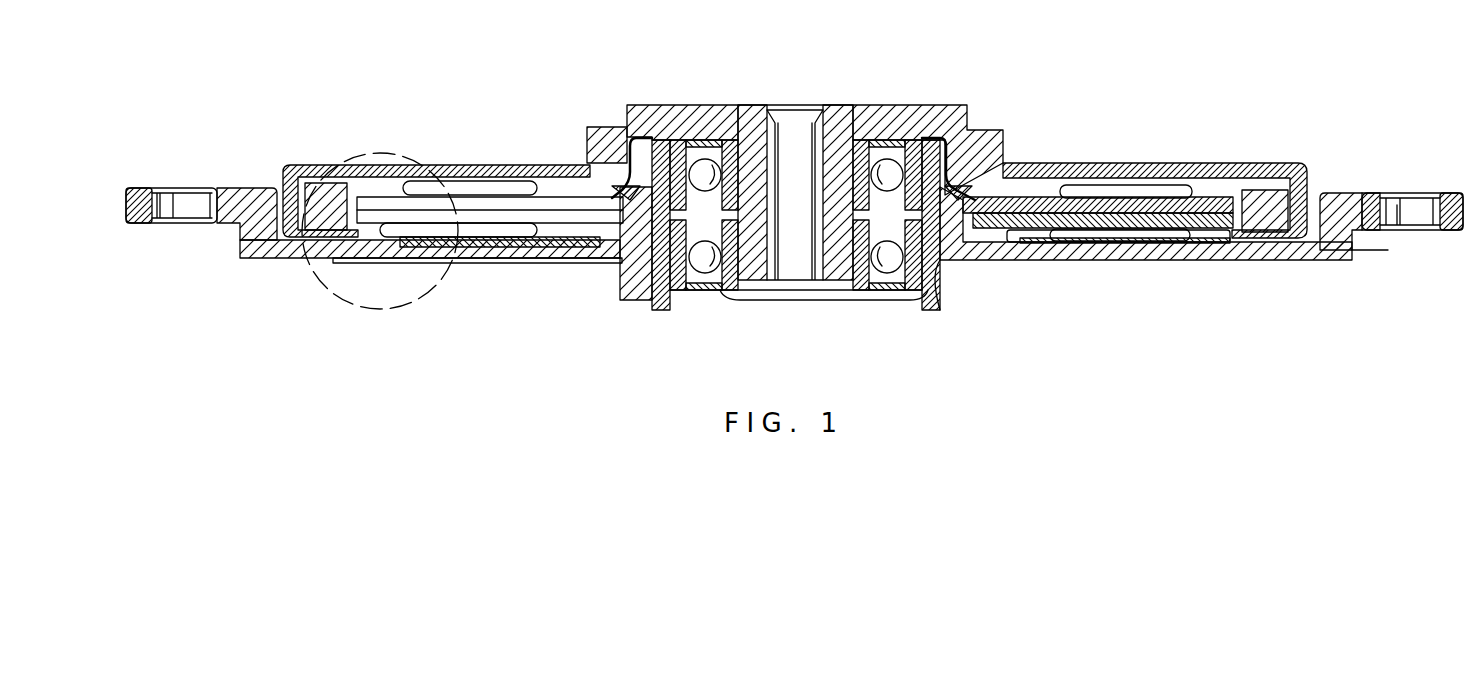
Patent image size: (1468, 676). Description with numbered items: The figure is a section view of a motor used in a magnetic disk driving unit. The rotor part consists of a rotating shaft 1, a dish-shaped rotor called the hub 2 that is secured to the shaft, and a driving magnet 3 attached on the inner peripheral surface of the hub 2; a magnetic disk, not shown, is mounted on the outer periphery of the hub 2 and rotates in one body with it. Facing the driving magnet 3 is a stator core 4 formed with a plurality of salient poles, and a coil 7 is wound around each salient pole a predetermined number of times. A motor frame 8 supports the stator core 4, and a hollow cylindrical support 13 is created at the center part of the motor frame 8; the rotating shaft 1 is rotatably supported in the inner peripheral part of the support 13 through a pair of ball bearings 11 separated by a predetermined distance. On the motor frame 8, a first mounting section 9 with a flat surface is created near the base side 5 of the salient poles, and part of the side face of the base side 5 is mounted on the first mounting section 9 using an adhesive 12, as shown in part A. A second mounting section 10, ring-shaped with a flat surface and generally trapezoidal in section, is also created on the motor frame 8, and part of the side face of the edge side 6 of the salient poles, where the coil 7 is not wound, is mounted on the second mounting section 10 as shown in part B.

The rotating shaft 1 is at (757, 137).
The hub 2 is at (702, 122).
The driving magnet 3 is at (1268, 205).
The stator core 4 is at (470, 197).
The base side 5 is at (568, 210).
The edge side 6 is at (303, 205).
The coil 7 is at (458, 182).
The motor frame 8 is at (230, 215).
The first mounting section 9 is at (608, 250).
The second mounting section 10 is at (372, 242).
The ball bearings 11 is at (888, 152).
The adhesive 12 is at (622, 135).
The support 13 is at (652, 267).
The part A is at (598, 143).
The part B is at (360, 310).